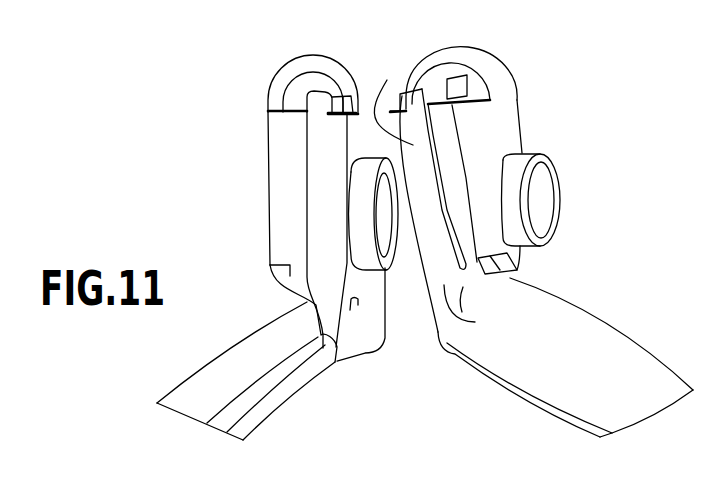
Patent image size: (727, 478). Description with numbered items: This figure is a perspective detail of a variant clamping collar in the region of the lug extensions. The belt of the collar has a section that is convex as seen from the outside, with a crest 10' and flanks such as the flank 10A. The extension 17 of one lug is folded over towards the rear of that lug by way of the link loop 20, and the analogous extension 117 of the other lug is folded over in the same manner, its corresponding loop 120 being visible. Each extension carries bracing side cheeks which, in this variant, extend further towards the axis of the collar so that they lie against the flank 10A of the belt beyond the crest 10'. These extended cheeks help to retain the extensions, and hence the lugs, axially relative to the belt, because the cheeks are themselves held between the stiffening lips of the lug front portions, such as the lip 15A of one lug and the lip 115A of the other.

The link loop 20 is at (343, 57).
The stiffening lip 15A is at (320, 137).
The extension 17 is at (268, 167).
The lip 115A is at (387, 80).
The hoop of right clip 120 is at (468, 48).
The extension 117 is at (488, 127).
The crest 10' is at (425, 359).
The flank 10A is at (543, 363).